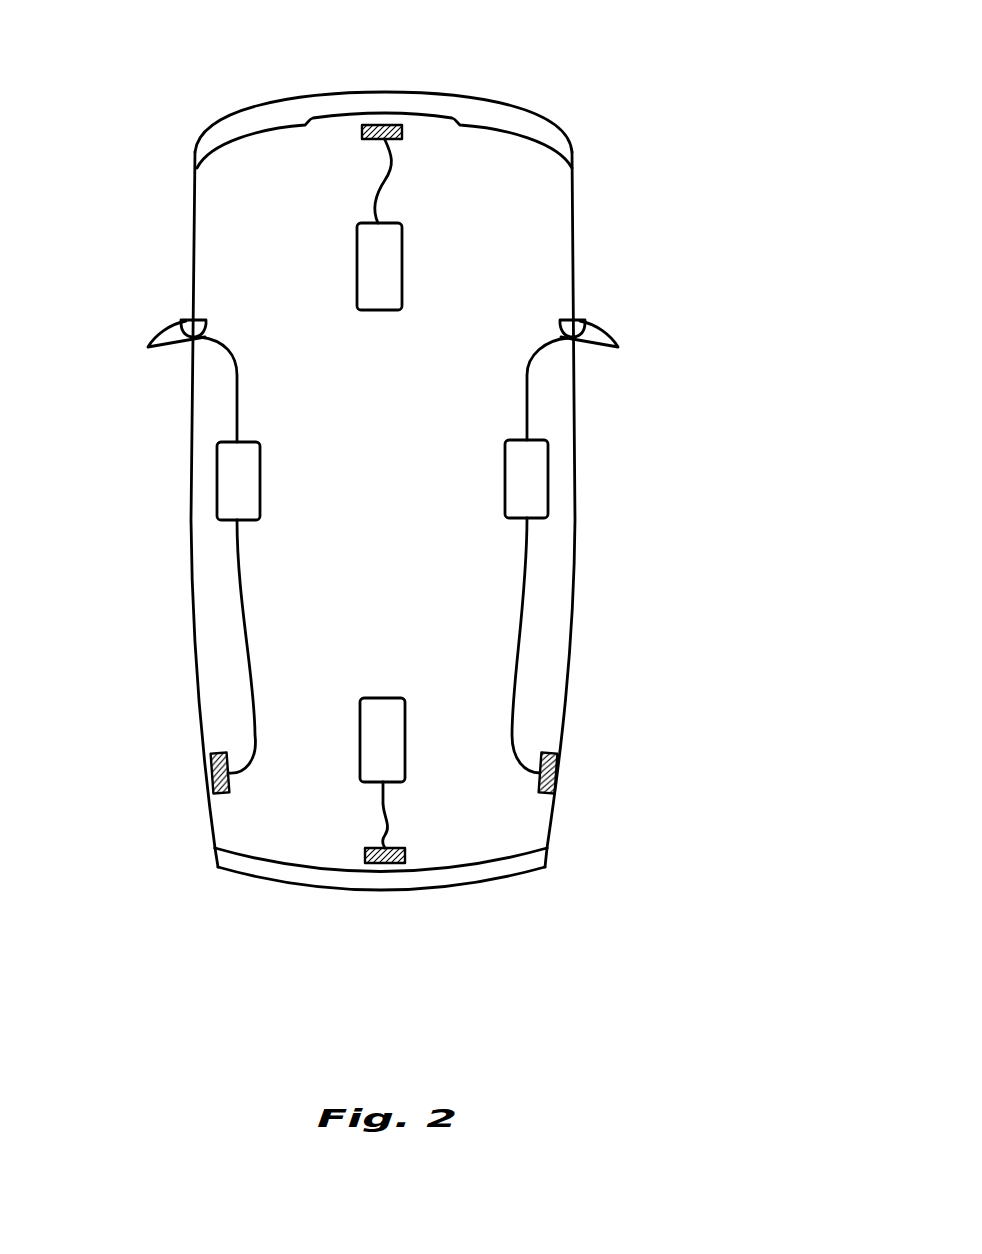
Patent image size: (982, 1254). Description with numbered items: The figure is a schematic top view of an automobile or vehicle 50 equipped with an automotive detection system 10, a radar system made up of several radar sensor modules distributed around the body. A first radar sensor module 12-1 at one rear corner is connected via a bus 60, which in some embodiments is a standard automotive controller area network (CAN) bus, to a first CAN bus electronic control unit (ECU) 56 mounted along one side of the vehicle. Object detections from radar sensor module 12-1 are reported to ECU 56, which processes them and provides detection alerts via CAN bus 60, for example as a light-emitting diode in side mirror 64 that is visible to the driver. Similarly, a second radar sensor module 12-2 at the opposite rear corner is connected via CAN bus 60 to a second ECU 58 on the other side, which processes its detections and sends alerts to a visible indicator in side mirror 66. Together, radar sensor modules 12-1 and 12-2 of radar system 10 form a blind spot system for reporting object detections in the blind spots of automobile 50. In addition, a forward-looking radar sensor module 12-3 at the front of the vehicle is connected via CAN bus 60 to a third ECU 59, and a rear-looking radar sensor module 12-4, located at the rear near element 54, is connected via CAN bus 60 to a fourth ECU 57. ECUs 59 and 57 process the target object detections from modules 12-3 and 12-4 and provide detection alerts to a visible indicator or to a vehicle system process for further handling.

The automotive detection system 10 is at (327, 265).
The first radar sensor module 12-1 is at (207, 773).
The second radar sensor module 12-2 is at (556, 778).
The forward-looking radar sensor module 12-3 is at (370, 125).
The rear-looking radar sensor module 12-4 is at (377, 865).
The vehicle 50 is at (677, 228).
The rear bumper 54 is at (452, 882).
The first CAN bus electronic control unit 56 is at (228, 492).
The fourth CAN bus electronic control unit 57 is at (388, 735).
The second CAN bus electronic control unit 58 is at (540, 473).
The third CAN bus electronic control unit 59 is at (392, 250).
The CAN bus 60 is at (387, 168).
The side mirror 64 is at (160, 327).
The side mirror 66 is at (605, 347).